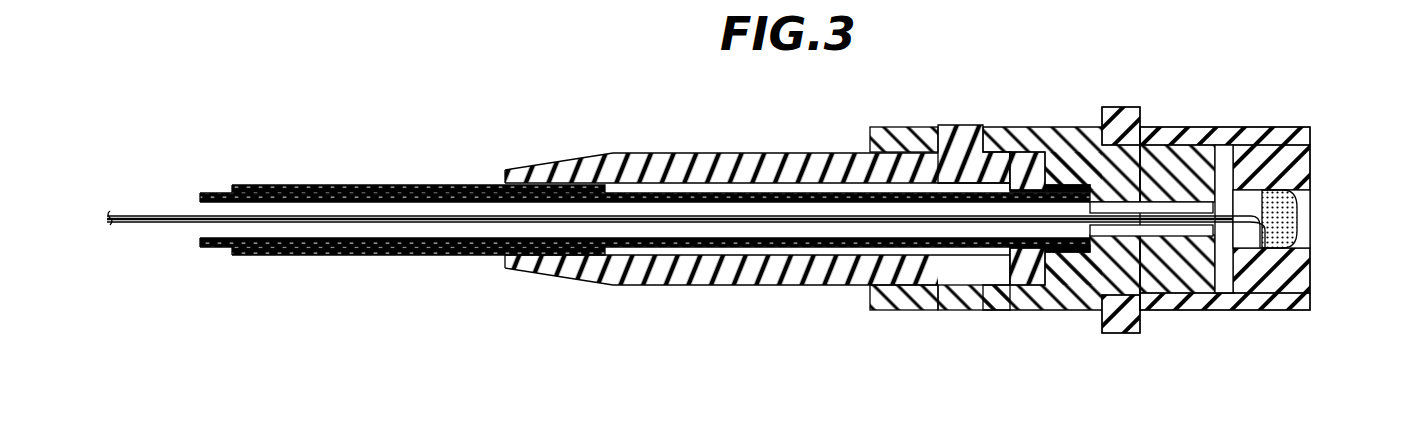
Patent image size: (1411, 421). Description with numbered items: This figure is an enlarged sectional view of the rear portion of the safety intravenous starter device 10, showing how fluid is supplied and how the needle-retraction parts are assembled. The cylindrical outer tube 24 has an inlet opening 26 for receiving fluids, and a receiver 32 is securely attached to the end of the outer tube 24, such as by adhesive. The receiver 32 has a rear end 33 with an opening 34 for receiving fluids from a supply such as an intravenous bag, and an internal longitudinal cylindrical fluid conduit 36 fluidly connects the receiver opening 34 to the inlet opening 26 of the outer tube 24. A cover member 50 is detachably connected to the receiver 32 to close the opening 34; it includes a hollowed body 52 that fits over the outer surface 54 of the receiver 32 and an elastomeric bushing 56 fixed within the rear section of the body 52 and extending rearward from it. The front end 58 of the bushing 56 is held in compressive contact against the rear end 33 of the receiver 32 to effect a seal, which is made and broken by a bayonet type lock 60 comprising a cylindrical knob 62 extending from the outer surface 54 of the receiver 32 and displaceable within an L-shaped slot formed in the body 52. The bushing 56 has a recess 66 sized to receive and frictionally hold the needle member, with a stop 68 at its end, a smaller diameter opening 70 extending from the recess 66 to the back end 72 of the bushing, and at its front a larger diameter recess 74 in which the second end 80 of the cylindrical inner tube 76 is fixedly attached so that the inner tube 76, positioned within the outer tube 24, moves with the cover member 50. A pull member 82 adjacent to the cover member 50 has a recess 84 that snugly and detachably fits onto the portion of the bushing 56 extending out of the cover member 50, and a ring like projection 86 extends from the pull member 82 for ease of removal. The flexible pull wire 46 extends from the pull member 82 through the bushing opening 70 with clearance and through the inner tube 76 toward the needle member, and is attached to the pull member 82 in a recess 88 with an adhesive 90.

The safety intravenous starter device 10 is at (465, 185).
The outer tube 24 is at (282, 255).
The inlet opening 26 is at (632, 258).
The receiver 32 is at (807, 158).
The rear end 33 is at (996, 297).
The opening 34 is at (992, 290).
The fluid conduit 36 is at (743, 253).
The pull wire 46 is at (145, 216).
The cover member 50 is at (902, 312).
The hollowed body 52 is at (1056, 128).
The outer surface 54 is at (668, 152).
The elastomeric bushing 56 is at (1127, 107).
The front end 58 is at (1003, 165).
The bayonet type lock 60 is at (946, 126).
The knob 62 is at (962, 126).
The recess 66 is at (1152, 205).
The stop 68 is at (1170, 305).
The opening 70 is at (1228, 213).
The back end 72 is at (1234, 268).
The recess 74 is at (1070, 262).
The inner tube 76 is at (202, 249).
The second end 80 is at (1093, 170).
The pull member 82 is at (1273, 127).
The recess 84 is at (1230, 292).
The ring like projection 86 is at (1122, 334).
The recess 88 is at (1308, 232).
The adhesive 90 is at (1298, 204).